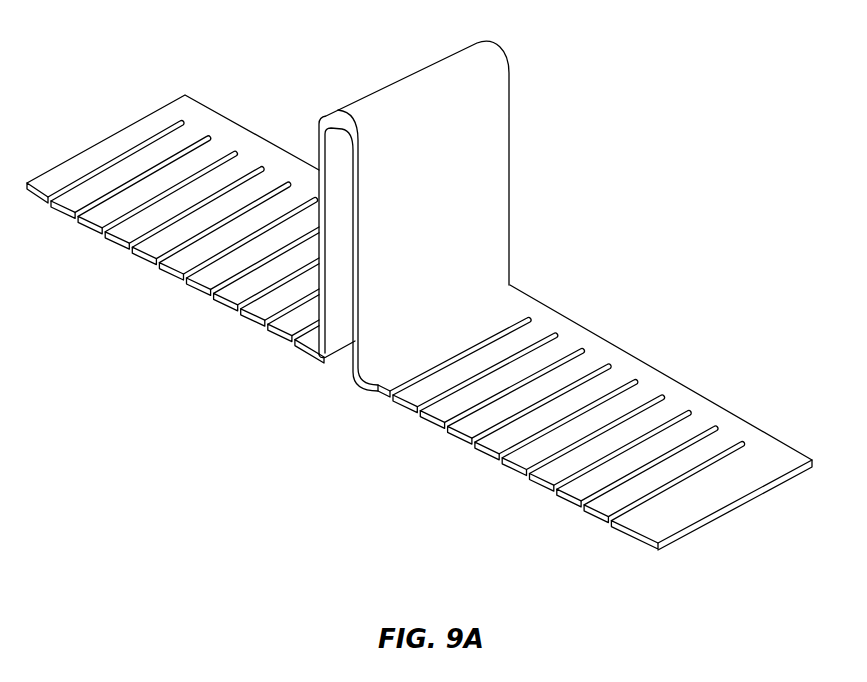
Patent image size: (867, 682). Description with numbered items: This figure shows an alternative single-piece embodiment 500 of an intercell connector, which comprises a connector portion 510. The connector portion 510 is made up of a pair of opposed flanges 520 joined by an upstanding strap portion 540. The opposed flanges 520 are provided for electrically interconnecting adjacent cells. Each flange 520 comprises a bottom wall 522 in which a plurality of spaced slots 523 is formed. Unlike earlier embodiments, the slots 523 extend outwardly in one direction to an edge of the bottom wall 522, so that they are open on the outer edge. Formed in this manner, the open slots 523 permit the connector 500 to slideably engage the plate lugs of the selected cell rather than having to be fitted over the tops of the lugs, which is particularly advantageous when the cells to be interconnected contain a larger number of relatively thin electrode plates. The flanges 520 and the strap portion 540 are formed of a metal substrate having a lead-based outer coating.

The alternative embodiment of intercell connector 500 is at (639, 142).
The connector portion 510 is at (76, 107).
The opposed flanges 520 is at (595, 409).
The bottom wall 522 is at (660, 413).
The spaced slots 523 is at (583, 402).
The strap portion 540 is at (470, 148).